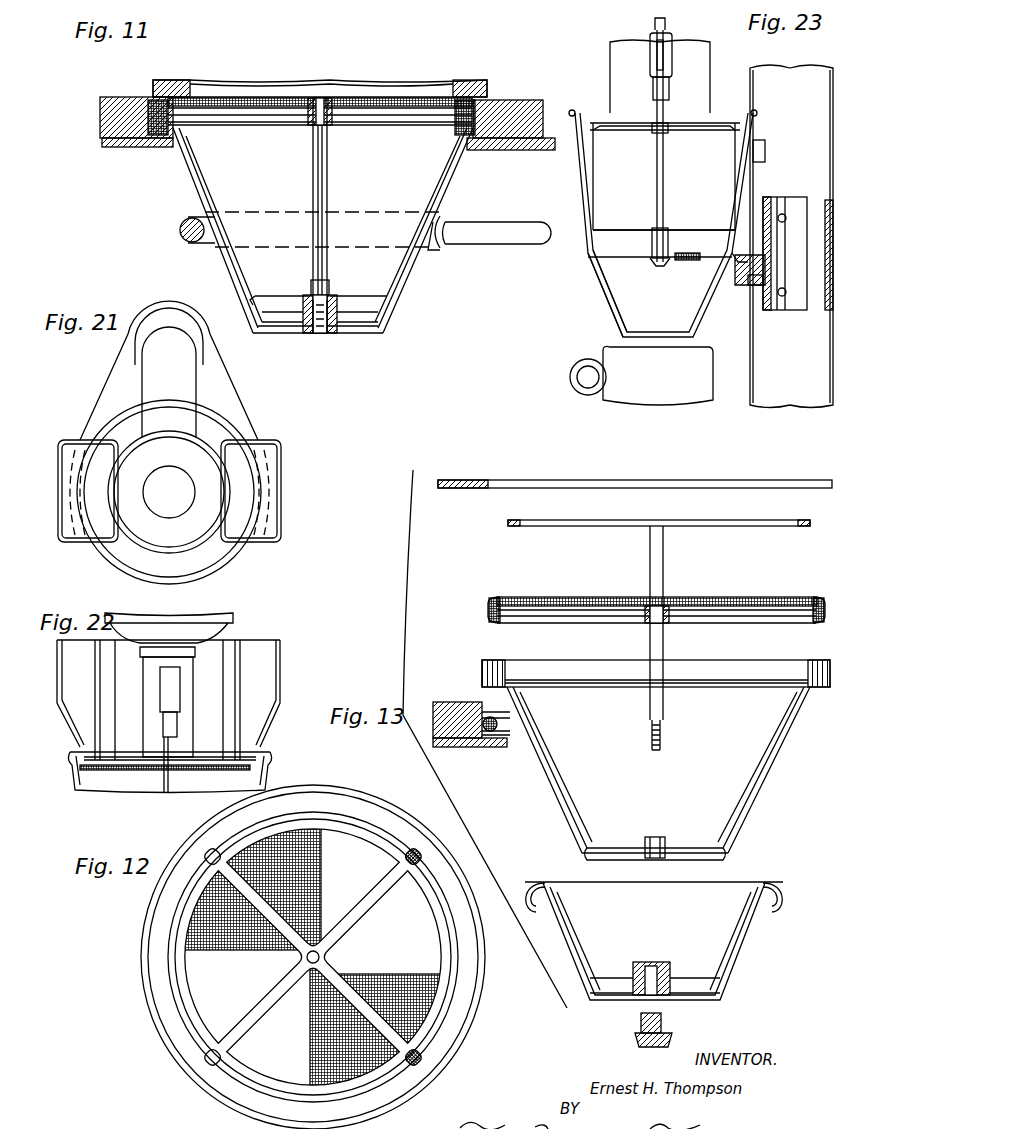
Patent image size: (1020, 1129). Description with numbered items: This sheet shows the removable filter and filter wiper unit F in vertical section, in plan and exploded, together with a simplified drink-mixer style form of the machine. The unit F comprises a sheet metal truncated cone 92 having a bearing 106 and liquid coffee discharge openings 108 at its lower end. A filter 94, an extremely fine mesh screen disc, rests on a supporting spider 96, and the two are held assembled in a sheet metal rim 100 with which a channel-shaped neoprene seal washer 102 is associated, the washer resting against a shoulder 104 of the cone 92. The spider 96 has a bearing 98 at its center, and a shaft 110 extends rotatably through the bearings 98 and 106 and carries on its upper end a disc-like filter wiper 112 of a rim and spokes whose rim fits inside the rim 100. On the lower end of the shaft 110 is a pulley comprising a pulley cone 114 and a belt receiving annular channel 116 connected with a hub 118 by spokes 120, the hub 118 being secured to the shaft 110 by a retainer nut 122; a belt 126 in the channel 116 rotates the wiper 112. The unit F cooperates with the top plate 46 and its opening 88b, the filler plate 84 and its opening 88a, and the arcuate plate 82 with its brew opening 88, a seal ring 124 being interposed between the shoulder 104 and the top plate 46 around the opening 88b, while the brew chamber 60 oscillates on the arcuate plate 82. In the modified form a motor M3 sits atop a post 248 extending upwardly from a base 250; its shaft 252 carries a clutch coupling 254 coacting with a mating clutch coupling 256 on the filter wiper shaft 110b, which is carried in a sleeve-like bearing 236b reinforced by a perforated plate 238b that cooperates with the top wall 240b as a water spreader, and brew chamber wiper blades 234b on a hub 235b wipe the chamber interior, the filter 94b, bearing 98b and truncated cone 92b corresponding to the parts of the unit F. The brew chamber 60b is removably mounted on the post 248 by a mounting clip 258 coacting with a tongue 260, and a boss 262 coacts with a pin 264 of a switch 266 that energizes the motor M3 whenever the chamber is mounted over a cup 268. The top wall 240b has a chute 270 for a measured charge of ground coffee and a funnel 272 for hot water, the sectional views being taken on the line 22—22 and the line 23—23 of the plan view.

In FIG. 21, the section line 22— 22 is at (47, 480).
In FIG. 21, the section line 23— 23 is at (185, 292).
In FIG. 11, the top plate 46 is at (110, 143).
In FIG. 13, the top plate 46 is at (470, 741).
In FIG. 11, the brew chamber 60 is at (470, 95).
In FIG. 23, the brew chamber 60b is at (582, 195).
In FIG. 21, the brew chamber 60b is at (112, 405).
In FIG. 22, the brew chamber 60b is at (77, 785).
In FIG. 11, the arcuate plate 82 is at (120, 95).
In FIG. 13, the arcuate plate 82 is at (470, 489).
In FIG. 11, the filler plate 84 is at (100, 126).
In FIG. 13, the filler plate 84 is at (440, 703).
In FIG. 13, the brew opening 88 is at (525, 480).
In FIG. 13, the opening 88a is at (495, 690).
In FIG. 13, the opening 88b is at (505, 745).
In FIG. 11, the truncated cone 92 is at (200, 190).
In FIG. 12, the truncated cone 92 is at (137, 963).
In FIG. 13, the truncated cone 92 is at (556, 798).
In FIG. 23, the truncated cone 92b is at (597, 283).
In FIG. 11, the filter 94 is at (235, 98).
In FIG. 12, the filter 94 is at (430, 1022).
In FIG. 13, the filter 94 is at (543, 598).
In FIG. 23, the filter 94b is at (690, 262).
In FIG. 11, the supporting spider 96 is at (365, 112).
In FIG. 13, the supporting spider 96 is at (602, 612).
In FIG. 11, the bearing 98 is at (312, 120).
In FIG. 13, the bearing 98 is at (662, 622).
In FIG. 23, the bearing 98b is at (652, 266).
In FIG. 12, the sheet metal rim 100 is at (468, 1003).
In FIG. 13, the sheet metal rim 100 is at (810, 598).
In FIG. 13, the seal washer 102 is at (812, 625).
In FIG. 13, the shoulder 104 is at (482, 670).
In FIG. 11, the bearing 106 is at (330, 282).
In FIG. 13, the bearing 106 is at (666, 838).
In FIG. 11, the liquid coffee discharge openings 108 is at (340, 296).
In FIG. 13, the liquid coffee discharge openings 108 is at (726, 859).
In FIG. 11, the shaft 110 is at (328, 192).
In FIG. 12, the shaft 110 is at (306, 957).
In FIG. 13, the shaft 110 is at (664, 563).
In FIG. 23, the filter wiper shaft 110b is at (657, 180).
In FIG. 22, the filter wiper shaft 110b is at (165, 790).
In FIG. 11, the filter wiper 112 is at (392, 97).
In FIG. 12, the filter wiper 112 is at (330, 960).
In FIG. 13, the filter wiper 112 is at (725, 526).
In FIG. 11, the pulley cone 114 is at (400, 310).
In FIG. 13, the pulley cone 114 is at (752, 942).
In FIG. 11, the belt receiving annular channel 116 is at (447, 250).
In FIG. 13, the belt receiving annular channel 116 is at (786, 905).
In FIG. 11, the hub 118 is at (302, 318).
In FIG. 13, the hub 118 is at (662, 964).
In FIG. 11, the spokes 120 is at (372, 322).
In FIG. 13, the spokes 120 is at (700, 992).
In FIG. 11, the retainer nut 122 is at (318, 334).
In FIG. 13, the retainer nut 122 is at (673, 1036).
In FIG. 11, the seal ring 124 is at (160, 140).
In FIG. 13, the seal ring 124 is at (492, 733).
In FIG. 11, the belt 126 is at (478, 240).
In FIG. 23, the brew chamber wiper blades 234b is at (617, 232).
In FIG. 23, the hub 235b is at (668, 232).
In FIG. 23, the sleeve-like bearing 236b is at (670, 140).
In FIG. 23, the perforated plate 238b is at (636, 128).
In FIG. 22, the perforated plate 238b is at (108, 770).
In FIG. 23, the top wall 240b is at (596, 120).
In FIG. 21, the top wall 240b is at (130, 560).
In FIG. 22, the top wall 240b is at (196, 762).
In FIG. 23, the post 248 is at (815, 75).
In FIG. 21, the post 248 is at (186, 395).
In FIG. 22, the post 248 is at (190, 680).
In FIG. 21, the base 250 is at (233, 403).
In FIG. 23, the shaft 252 is at (667, 22).
In FIG. 23, the clutch coupling 254 is at (652, 32).
In FIG. 22, the clutch coupling 254 is at (162, 700).
In FIG. 23, the mating clutch coupling 256 is at (655, 82).
In FIG. 22, the mating clutch coupling 256 is at (178, 727).
In FIG. 23, the mounting clip 258 is at (765, 143).
In FIG. 23, the tongue 260 is at (750, 165).
In FIG. 23, the boss 262 is at (720, 282).
In FIG. 23, the pin 264 is at (752, 288).
In FIG. 23, the switch 266 is at (795, 300).
In FIG. 23, the cup 268 is at (662, 398).
In FIG. 23, the chute 270 is at (612, 50).
In FIG. 21, the chute 270 is at (290, 434).
In FIG. 22, the chute 270 is at (280, 650).
In FIG. 21, the funnel 272 is at (66, 440).
In FIG. 22, the funnel 272 is at (93, 667).
In FIG. 11, the filter and filter wiper unit F is at (452, 197).
In FIG. 13, the filter and filter wiper unit F is at (458, 470).
In FIG. 21, the motor M3 is at (135, 615).